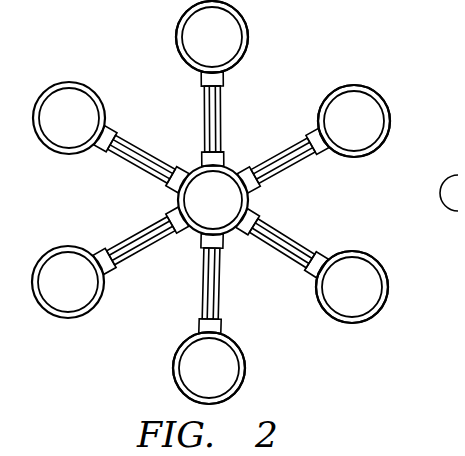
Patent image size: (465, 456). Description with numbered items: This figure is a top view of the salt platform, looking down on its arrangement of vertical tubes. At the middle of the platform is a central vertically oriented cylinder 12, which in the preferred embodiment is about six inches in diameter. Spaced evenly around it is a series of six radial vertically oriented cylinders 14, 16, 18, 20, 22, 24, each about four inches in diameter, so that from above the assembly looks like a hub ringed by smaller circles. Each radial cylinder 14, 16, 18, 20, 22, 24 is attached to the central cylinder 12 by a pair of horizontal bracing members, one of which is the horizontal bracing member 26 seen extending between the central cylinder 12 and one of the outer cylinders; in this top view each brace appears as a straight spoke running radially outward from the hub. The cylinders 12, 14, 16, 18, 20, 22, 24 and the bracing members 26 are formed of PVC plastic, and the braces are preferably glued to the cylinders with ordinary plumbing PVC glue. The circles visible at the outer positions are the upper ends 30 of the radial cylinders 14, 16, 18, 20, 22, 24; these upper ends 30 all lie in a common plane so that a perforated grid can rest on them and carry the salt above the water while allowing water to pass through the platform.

The central vertically oriented cylinder 12 is at (178, 202).
The radial vertically oriented cylinder 14 is at (111, 112).
The radial vertically oriented cylinder 16 is at (176, 37).
The radial vertically oriented cylinder 18 is at (380, 95).
The radial vertically oriented cylinder 20 is at (378, 261).
The radial vertically oriented cylinder 22 is at (245, 368).
The radial vertically oriented cylinder 24 is at (87, 315).
The horizontal bracing member 26 is at (139, 148).
The upper end 30 is at (237, 62).